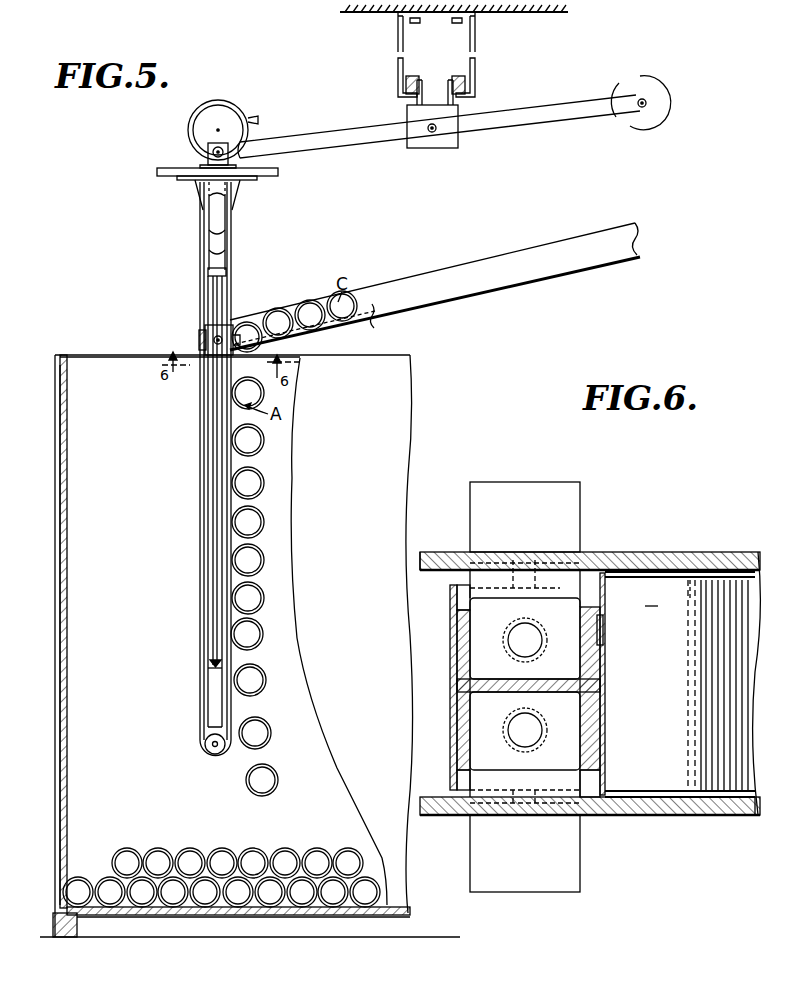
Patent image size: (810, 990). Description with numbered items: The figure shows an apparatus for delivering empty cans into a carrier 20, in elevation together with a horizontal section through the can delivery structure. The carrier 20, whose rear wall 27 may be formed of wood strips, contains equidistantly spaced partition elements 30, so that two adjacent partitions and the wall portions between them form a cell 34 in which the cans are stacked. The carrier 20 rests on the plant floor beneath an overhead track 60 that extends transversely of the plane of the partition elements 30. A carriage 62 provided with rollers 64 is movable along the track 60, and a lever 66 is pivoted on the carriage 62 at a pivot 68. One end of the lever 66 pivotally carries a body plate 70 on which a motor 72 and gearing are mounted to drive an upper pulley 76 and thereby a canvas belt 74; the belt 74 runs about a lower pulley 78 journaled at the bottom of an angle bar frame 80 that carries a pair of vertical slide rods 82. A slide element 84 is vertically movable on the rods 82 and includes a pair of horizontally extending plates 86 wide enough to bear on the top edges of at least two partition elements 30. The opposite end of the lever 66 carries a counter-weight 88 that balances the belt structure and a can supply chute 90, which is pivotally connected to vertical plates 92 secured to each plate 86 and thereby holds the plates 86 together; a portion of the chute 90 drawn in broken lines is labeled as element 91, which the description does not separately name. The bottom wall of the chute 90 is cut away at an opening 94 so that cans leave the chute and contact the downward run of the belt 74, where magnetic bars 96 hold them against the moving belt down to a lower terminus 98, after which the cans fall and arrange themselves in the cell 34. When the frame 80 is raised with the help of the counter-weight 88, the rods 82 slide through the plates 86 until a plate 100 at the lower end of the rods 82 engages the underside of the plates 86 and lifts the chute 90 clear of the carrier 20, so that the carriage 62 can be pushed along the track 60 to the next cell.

In FIG. 5, the carrier 20 is at (52, 735).
In FIG. 5, the rear wall 27 is at (72, 808).
In FIG. 5, the partition element 30 is at (105, 358).
In FIG. 6, the partition element 30 is at (590, 553).
In FIG. 5, the cell 34 is at (80, 521).
In FIG. 6, the cell 34 is at (458, 571).
In FIG. 5, the overhead track 60 is at (473, 75).
In FIG. 5, the carriage 62 is at (456, 147).
In FIG. 5, the rollers 64 is at (414, 84).
In FIG. 5, the lever 66 is at (555, 116).
In FIG. 5, the pivot 68 is at (430, 132).
In FIG. 5, the body plate 70 is at (272, 178).
In FIG. 5, the motor 72 is at (236, 118).
In FIG. 5, the belt 74 is at (203, 262).
In FIG. 6, the belt 74 is at (604, 645).
In FIG. 5, the upper pulley 76 is at (235, 236).
In FIG. 5, the lower pulley 78 is at (214, 754).
In FIG. 5, the angle bar frame 80 is at (206, 498).
In FIG. 6, the angle bar frame 80 is at (453, 640).
In FIG. 5, the slide rods 82 is at (217, 438).
In FIG. 6, the slide rods 82 is at (510, 626).
In FIG. 5, the slide element 84 is at (200, 339).
In FIG. 5, the horizontally extending plates 86 is at (210, 352).
In FIG. 6, the horizontally extending plates 86 is at (516, 495).
In FIG. 5, the counter-weight 88 is at (646, 86).
In FIG. 5, the can supply chute 90 is at (470, 272).
In FIG. 6, the can supply chute 90 is at (750, 812).
In FIG. 5, the conveyor rail 91 is at (378, 300).
In FIG. 6, the conveyor rail 91 is at (712, 555).
In FIG. 5, the vertical plates 92 is at (228, 325).
In FIG. 6, the vertical plates 92 is at (570, 597).
In FIG. 5, the opening 94 is at (257, 375).
In FIG. 6, the opening 94 is at (748, 648).
In FIG. 5, the magnetic bars 96 is at (252, 500).
In FIG. 6, the magnetic bars 96 is at (590, 785).
In FIG. 5, the lower terminus 98 is at (220, 667).
In FIG. 5, the plate 100 is at (213, 660).